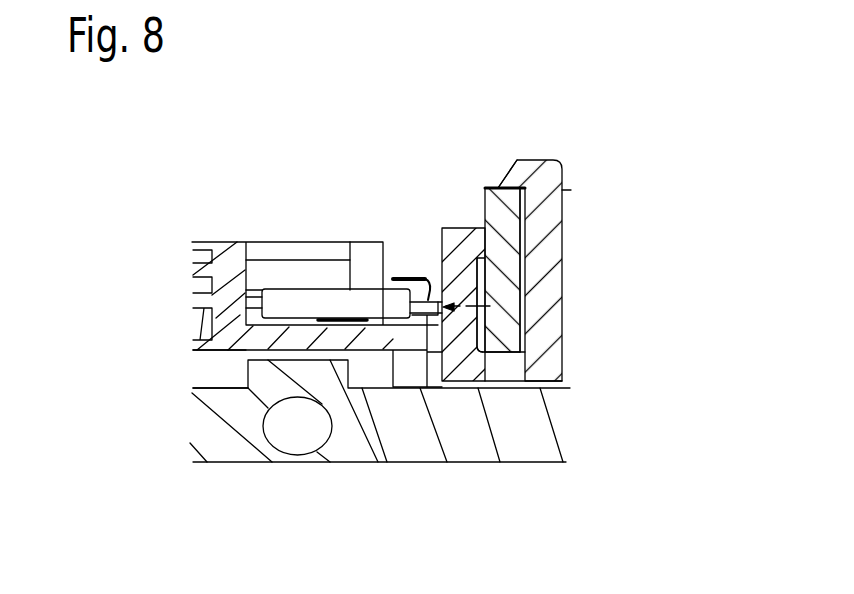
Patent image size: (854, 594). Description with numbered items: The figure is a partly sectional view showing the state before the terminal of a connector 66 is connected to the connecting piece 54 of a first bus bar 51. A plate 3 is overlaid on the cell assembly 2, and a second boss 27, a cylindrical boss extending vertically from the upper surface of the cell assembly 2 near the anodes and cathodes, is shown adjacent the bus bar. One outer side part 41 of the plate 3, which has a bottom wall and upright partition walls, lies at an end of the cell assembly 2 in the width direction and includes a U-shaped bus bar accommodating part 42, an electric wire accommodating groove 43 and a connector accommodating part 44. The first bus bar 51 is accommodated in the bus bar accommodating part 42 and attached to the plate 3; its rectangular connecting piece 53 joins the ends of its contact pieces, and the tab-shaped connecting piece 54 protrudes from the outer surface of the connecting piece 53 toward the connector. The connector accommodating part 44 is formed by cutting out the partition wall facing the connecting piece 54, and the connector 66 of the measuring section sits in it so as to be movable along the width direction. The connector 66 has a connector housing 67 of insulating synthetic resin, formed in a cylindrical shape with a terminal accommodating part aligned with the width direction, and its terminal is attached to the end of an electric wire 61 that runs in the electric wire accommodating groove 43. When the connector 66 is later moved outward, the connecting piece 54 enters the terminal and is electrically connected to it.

The cell assembly 2 is at (578, 421).
The plate 3 is at (212, 222).
The outer side part 41 is at (288, 236).
The bus bar accommodating part 42 is at (458, 337).
The electric wire accommodating groove 43 is at (303, 273).
The connector accommodating part 44 is at (365, 263).
The second boss 27 is at (409, 277).
The first bus bar 51 is at (553, 168).
The connecting piece 53 is at (520, 207).
The connecting piece 54 is at (447, 245).
The electric wire 61 is at (197, 340).
The connector 66 is at (370, 312).
The connector housing 67 is at (340, 303).